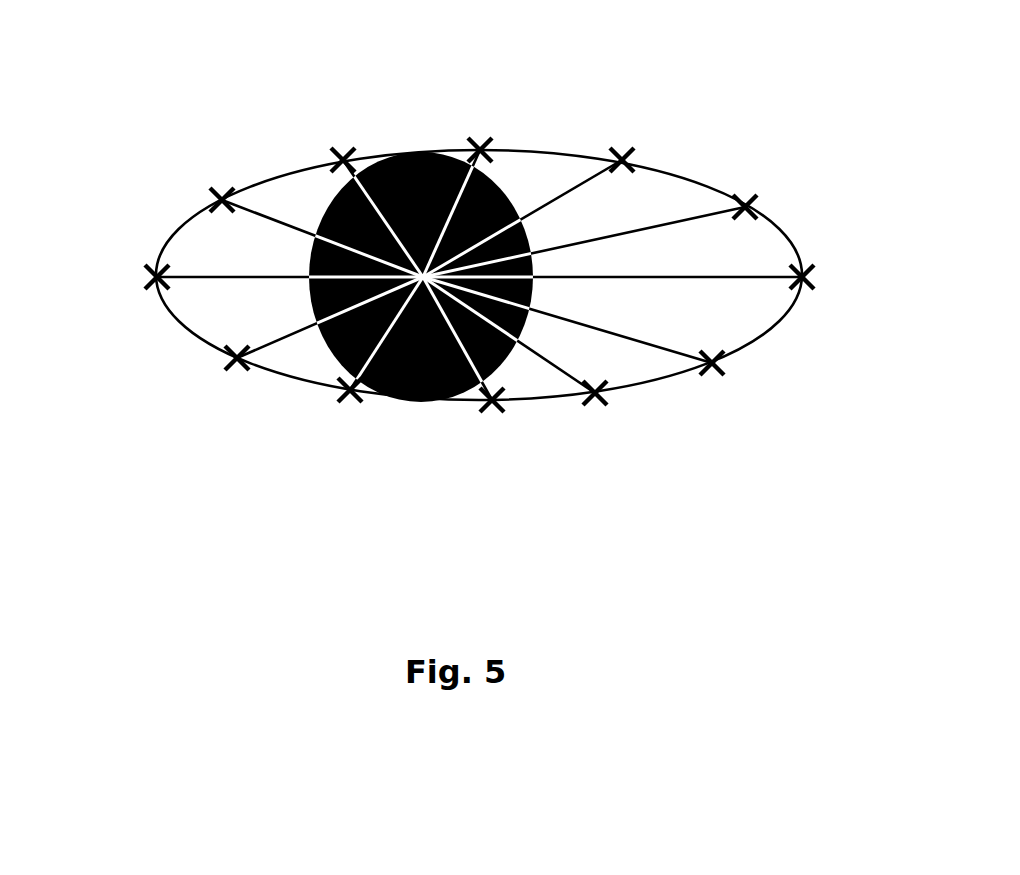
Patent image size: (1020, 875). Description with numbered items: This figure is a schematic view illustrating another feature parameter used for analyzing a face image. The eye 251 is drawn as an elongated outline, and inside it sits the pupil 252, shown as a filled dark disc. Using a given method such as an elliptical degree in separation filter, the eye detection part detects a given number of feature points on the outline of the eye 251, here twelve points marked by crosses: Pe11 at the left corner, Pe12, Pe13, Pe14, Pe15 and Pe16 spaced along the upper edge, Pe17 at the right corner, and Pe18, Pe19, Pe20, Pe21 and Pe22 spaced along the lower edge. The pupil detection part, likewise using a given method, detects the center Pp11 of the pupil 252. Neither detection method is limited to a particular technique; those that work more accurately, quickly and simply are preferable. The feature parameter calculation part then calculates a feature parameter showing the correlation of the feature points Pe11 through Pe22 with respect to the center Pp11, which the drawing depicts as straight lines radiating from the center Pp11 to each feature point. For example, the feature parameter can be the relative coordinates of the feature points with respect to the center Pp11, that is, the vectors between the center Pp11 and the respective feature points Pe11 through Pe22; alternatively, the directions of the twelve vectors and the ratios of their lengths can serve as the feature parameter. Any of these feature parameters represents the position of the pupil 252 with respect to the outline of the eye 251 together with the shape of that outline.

The eye 251 is at (688, 183).
The pupil 252 is at (503, 188).
The center of the pupil Pp11 is at (423, 278).
The feature point Pe11 is at (150, 277).
The feature point Pe12 is at (222, 194).
The feature point Pe13 is at (343, 154).
The feature point Pe14 is at (480, 144).
The feature point Pe15 is at (622, 154).
The feature point Pe16 is at (745, 201).
The feature point Pe17 is at (810, 277).
The feature point Pe18 is at (712, 370).
The feature point Pe19 is at (595, 400).
The feature point Pe20 is at (492, 407).
The feature point Pe21 is at (350, 397).
The feature point Pe22 is at (237, 365).